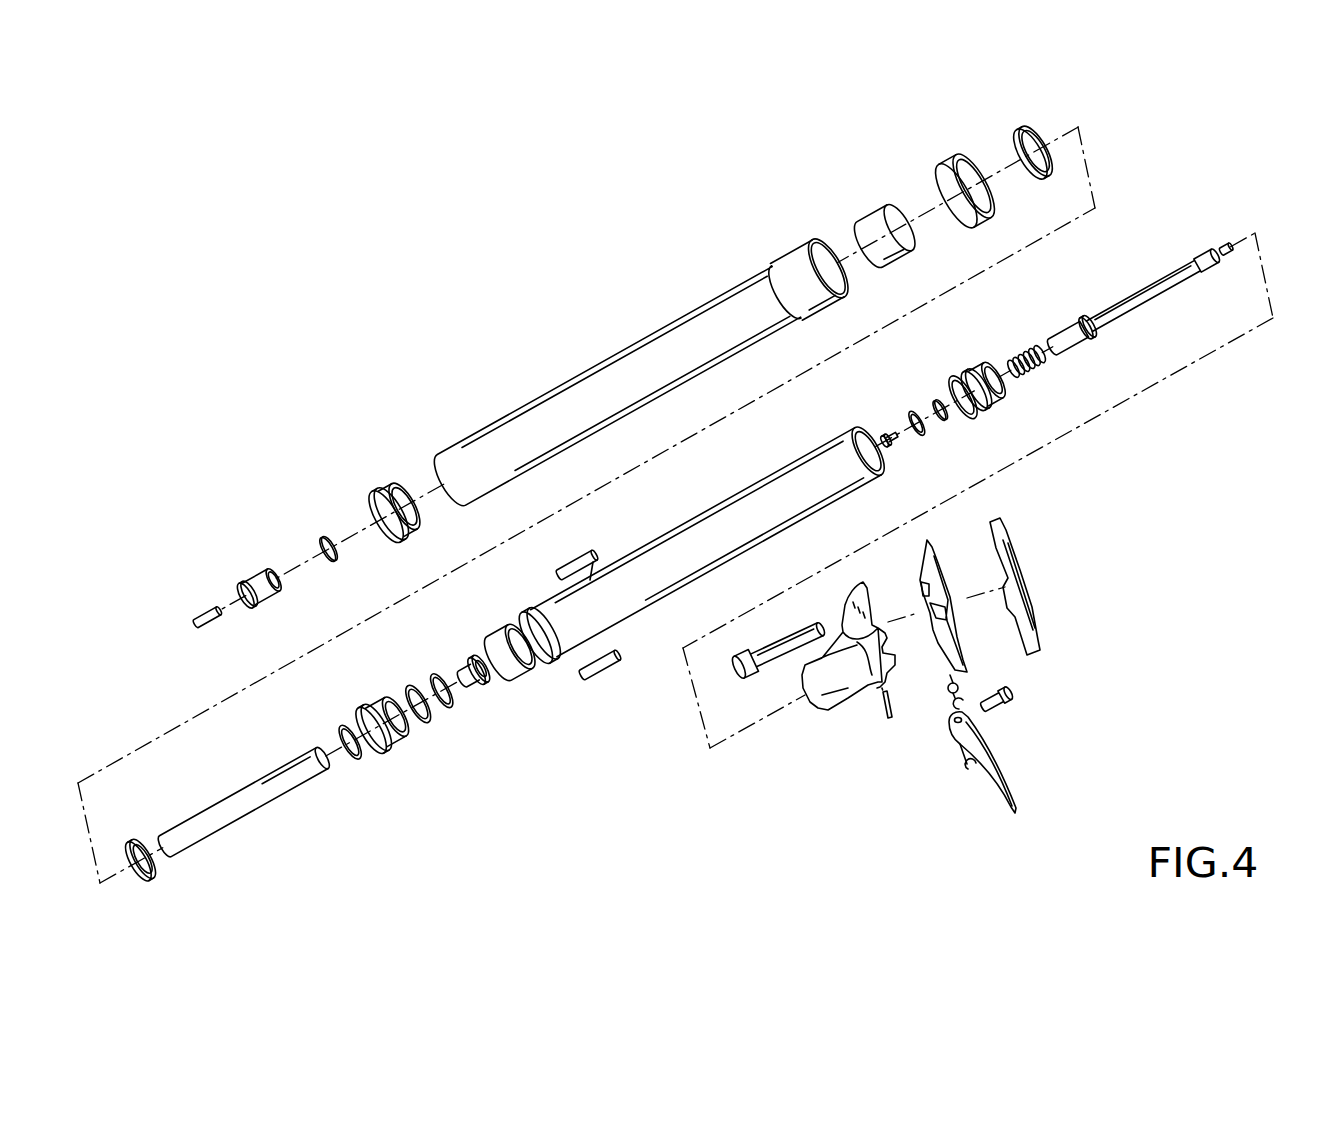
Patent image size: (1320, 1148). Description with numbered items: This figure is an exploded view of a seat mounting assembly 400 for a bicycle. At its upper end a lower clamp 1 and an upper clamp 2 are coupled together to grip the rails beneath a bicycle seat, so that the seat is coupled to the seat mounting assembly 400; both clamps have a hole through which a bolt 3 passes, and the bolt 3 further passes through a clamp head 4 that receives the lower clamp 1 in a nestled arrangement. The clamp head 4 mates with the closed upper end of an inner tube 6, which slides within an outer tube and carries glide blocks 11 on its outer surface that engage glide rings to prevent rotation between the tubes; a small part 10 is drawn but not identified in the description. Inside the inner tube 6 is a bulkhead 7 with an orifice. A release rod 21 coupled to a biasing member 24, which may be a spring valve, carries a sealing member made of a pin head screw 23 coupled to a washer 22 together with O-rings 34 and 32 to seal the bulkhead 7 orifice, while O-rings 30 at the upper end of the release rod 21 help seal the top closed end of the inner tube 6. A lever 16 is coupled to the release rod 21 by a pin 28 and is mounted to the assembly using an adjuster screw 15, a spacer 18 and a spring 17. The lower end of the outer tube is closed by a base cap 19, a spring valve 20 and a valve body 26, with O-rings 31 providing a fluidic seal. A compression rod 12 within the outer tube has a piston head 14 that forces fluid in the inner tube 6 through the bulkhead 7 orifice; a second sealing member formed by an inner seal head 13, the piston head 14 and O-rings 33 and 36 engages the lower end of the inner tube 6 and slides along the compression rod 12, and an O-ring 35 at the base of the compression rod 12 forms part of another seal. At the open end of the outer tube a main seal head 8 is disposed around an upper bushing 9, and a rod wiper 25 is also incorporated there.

The lower clamp 1 is at (932, 542).
The upper clamp 2 is at (1030, 560).
The bolt 3 is at (750, 673).
The clamp head 4 is at (880, 652).
The inner tube 6 is at (745, 484).
The bulkhead 7 is at (991, 410).
The main seal head 8 is at (940, 168).
The upper bushing 9 is at (871, 208).
The cap 10 is at (532, 667).
The glide blocks 11 is at (598, 553).
The compression rod 12 is at (220, 826).
The inner seal head 13 is at (402, 740).
The piston head 14 is at (478, 682).
The adjuster screw 15 is at (1016, 688).
The lever 16 is at (1007, 773).
The spring 17 is at (955, 704).
The spacer 18 is at (969, 768).
The base cap 19 is at (387, 482).
The spring valve 20 is at (255, 573).
The release rod 21 is at (1137, 298).
The washer 22 is at (918, 418).
The pin head screw 23 is at (886, 436).
The biasing member 24 is at (1040, 368).
The rod wiper 25 is at (1021, 128).
The valve body 26 is at (198, 618).
The pin 28 is at (885, 717).
The O-rings 30 is at (1223, 242).
The O-rings 31 is at (324, 536).
The O-ring 32 is at (957, 384).
The O-ring 33 is at (427, 723).
The O-ring 34 is at (937, 400).
The O-ring 35 is at (155, 868).
The O-ring 36 is at (357, 758).
The seat mounting assembly 400 is at (1205, 546).